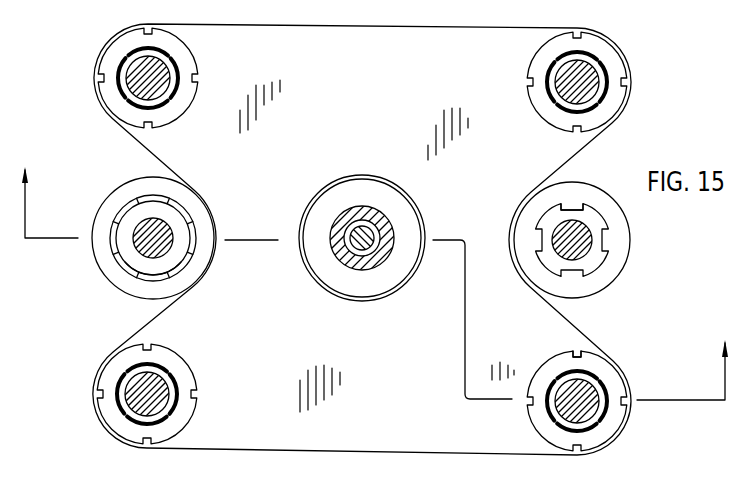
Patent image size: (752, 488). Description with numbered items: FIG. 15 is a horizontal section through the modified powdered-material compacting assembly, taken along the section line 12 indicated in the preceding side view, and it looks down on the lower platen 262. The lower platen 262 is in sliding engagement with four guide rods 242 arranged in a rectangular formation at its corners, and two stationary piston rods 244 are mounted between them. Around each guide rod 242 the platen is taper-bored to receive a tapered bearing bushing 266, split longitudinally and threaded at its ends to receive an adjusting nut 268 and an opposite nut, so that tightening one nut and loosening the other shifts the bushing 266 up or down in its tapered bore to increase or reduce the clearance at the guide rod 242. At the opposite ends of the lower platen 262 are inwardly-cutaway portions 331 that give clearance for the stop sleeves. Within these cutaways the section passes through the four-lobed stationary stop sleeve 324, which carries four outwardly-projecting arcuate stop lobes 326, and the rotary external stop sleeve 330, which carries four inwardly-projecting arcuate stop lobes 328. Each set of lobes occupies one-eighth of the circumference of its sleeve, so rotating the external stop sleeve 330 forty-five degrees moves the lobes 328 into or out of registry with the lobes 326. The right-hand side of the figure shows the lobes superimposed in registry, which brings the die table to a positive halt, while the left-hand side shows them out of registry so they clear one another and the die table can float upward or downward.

The section line 12 is at (378, 269).
The guide rods 242 is at (143, 68).
The stationary piston rods 244 is at (143, 247).
The lower platen 262 is at (530, 23).
The tapered bearing bushings 266 is at (597, 388).
The adjusting nut 268 is at (585, 365).
The four-lobed stationary stop sleeve 324 is at (152, 268).
The outwardly-projecting arcuate stop lobes 326 is at (130, 206).
The inwardly-projecting arcuate stop lobes 328 is at (113, 247).
The rotary external stop sleeve 330 is at (107, 258).
The inwardly-cutaway portions 331 is at (193, 190).